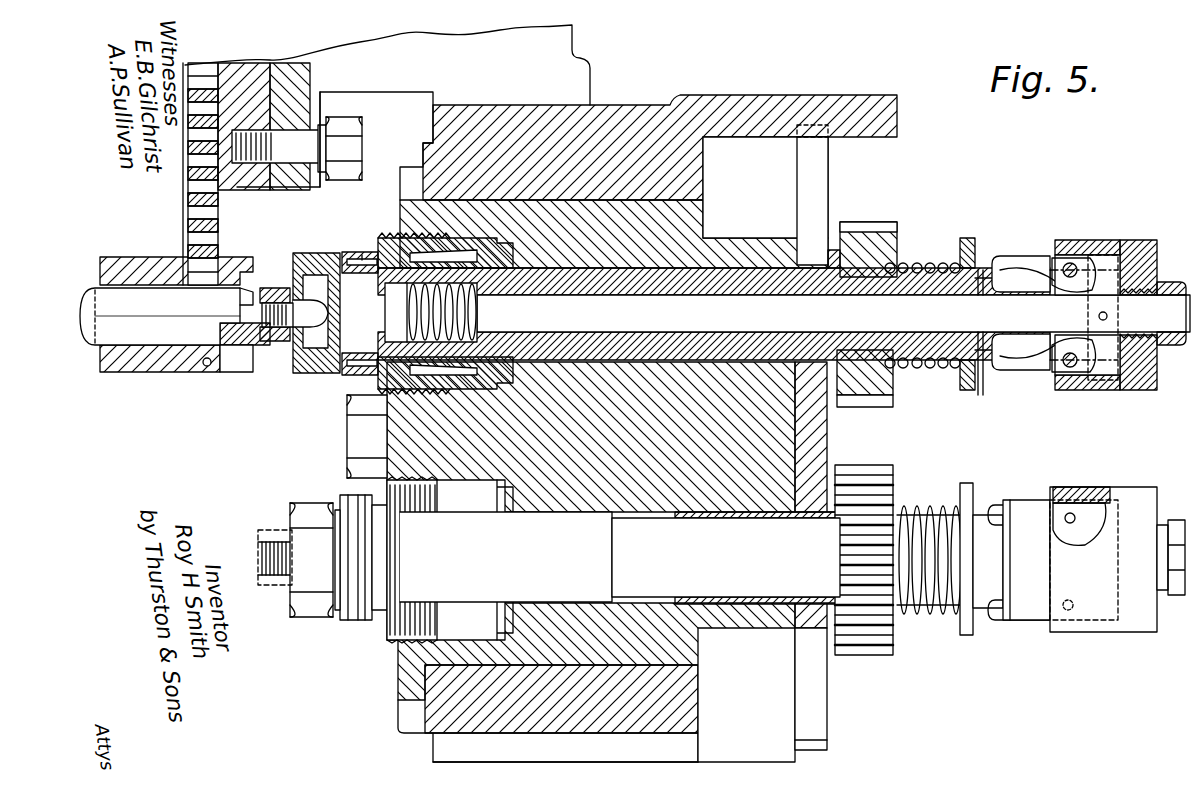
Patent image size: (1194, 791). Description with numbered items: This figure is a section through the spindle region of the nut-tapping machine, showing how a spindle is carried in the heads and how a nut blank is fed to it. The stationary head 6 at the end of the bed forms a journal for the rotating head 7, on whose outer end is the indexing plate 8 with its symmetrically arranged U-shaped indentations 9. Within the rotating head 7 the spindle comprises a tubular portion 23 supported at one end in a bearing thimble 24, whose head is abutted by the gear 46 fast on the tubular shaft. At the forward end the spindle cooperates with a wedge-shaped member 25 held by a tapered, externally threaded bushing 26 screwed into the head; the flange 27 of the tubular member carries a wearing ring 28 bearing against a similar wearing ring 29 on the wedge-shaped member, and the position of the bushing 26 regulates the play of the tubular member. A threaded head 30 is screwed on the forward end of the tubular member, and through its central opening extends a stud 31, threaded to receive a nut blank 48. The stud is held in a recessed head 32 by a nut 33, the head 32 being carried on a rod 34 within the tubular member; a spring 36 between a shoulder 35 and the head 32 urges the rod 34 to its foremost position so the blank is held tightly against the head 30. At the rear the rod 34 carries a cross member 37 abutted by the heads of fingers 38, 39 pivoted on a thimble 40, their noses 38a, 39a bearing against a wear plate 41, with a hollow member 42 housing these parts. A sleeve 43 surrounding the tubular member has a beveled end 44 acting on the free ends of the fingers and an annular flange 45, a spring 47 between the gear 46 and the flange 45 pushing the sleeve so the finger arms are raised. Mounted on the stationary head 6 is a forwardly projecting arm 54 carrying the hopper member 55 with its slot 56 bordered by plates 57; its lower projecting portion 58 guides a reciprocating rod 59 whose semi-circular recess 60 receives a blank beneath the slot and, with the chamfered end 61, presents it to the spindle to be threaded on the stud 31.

The stationary head 6 is at (662, 108).
The rotating head 7 is at (570, 505).
The indexing plate 8 is at (829, 722).
The U-shaped indentations 9 is at (763, 443).
The tubular portion 23 is at (910, 380).
The thimble 24 is at (834, 250).
The wedge-shaped member 25 is at (368, 252).
The bushing 26 is at (347, 412).
The flange 27 is at (345, 255).
The wearing ring 28 is at (355, 255).
The wearing ring 29 is at (352, 378).
The head 30 is at (302, 258).
The stud 31 is at (295, 372).
The head 32 is at (338, 375).
The nut 33 is at (292, 286).
The rod 34 is at (833, 313).
The shoulder 35 is at (518, 338).
The spring 36 is at (474, 304).
The cross member 37 is at (1110, 256).
The finger 38 is at (1008, 256).
The nose 38a is at (1068, 262).
The finger 39 is at (1015, 372).
The nose 39a is at (1068, 372).
The thimble 40 is at (1030, 262).
The wear plate 41 is at (1060, 338).
The hollow member 42 is at (1168, 280).
The sleeve 43 is at (980, 392).
The beveled end 44 is at (1000, 375).
The annular flange 45 is at (968, 238).
The gear 46 is at (870, 230).
The spring 47 is at (918, 262).
The nut blank 48 is at (274, 343).
The forwardly projecting arm 54 is at (387, 65).
The hopper member 55 is at (256, 68).
The slot 56 is at (215, 66).
The plates 57 is at (185, 206).
The projecting portion 58 is at (152, 262).
The reciprocating rod 59 is at (92, 345).
The semi-circular recess 60 is at (242, 348).
The chamfer 61 is at (243, 270).